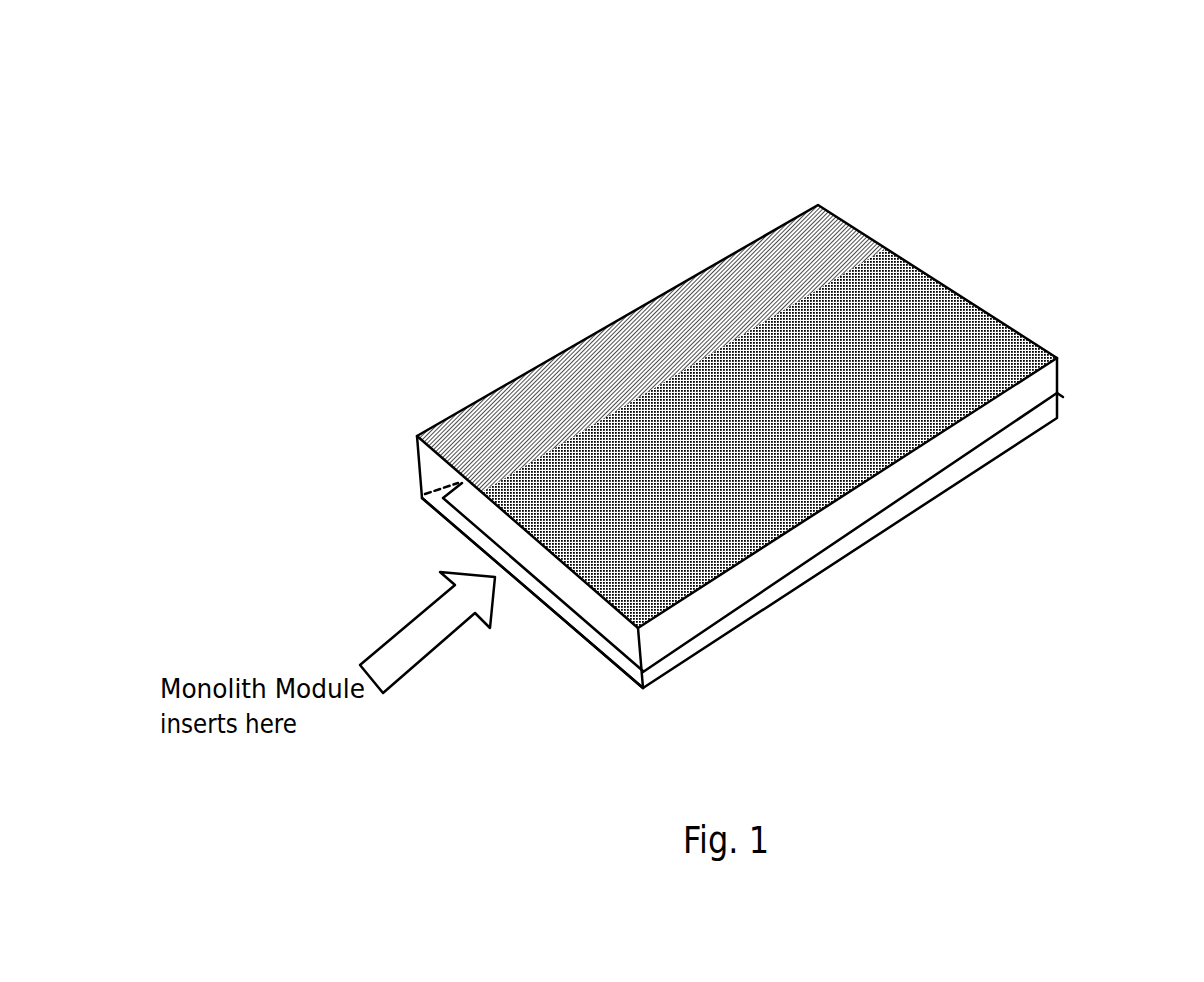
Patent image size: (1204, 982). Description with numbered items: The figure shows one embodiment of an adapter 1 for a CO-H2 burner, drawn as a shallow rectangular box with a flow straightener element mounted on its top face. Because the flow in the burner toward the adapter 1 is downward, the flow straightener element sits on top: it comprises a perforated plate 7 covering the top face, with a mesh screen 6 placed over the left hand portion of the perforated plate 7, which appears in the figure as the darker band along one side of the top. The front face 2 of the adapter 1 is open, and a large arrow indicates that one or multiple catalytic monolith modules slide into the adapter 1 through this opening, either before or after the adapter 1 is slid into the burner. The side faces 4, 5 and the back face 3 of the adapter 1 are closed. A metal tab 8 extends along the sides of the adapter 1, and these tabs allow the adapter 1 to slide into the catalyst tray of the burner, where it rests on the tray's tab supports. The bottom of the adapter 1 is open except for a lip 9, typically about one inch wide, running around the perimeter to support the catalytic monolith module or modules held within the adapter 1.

The adapter 1 is at (635, 203).
The front face 2 is at (530, 612).
The back face 3 is at (977, 270).
The side face 4 is at (834, 596).
The side face 5 is at (533, 340).
The mesh screen 6 is at (839, 240).
The perforated plate 7 is at (982, 353).
The metal tab 8 is at (418, 474).
The lip 9 is at (598, 650).